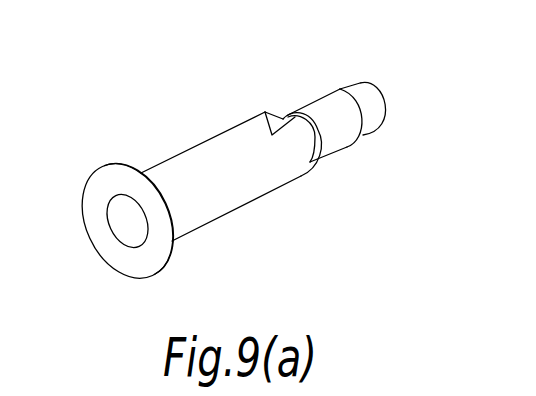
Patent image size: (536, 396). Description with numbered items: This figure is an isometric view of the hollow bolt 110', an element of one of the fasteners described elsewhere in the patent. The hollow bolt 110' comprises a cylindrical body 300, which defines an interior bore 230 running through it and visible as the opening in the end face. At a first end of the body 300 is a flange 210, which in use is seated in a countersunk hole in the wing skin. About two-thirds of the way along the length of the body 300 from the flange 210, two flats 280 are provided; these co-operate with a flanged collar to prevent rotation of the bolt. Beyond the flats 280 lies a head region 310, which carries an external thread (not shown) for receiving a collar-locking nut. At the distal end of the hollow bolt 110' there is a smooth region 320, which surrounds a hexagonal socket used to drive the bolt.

The hollow bolt 110' is at (204, 162).
The flange 210 is at (122, 262).
The interior bore 230 is at (114, 210).
The flats 280 is at (265, 112).
The cylindrical body 300 is at (220, 198).
The head region 310 is at (318, 102).
The smooth region 320 is at (362, 93).